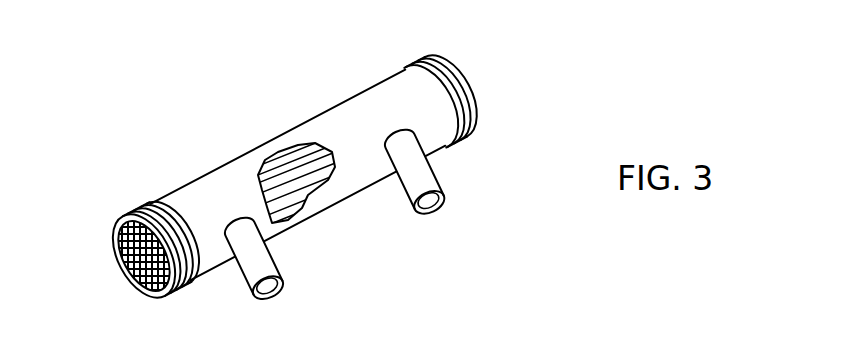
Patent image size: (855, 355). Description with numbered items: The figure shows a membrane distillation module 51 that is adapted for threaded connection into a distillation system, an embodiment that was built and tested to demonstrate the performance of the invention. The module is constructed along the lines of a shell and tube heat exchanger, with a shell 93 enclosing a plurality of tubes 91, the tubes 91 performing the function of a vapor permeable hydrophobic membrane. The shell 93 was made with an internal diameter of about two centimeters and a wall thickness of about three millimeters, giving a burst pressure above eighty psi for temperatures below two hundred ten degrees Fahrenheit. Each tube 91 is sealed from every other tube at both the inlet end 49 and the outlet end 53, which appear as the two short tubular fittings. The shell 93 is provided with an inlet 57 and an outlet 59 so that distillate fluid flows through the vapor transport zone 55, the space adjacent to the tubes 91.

The membrane distillation module 51 is at (172, 58).
The shell 93 is at (380, 83).
The outlet 59 is at (478, 100).
The inlet 57 is at (147, 297).
The vapor transport zone 55 is at (288, 180).
The tubes 91 is at (302, 160).
The inlet end 49 is at (267, 287).
The outlet end 53 is at (433, 200).